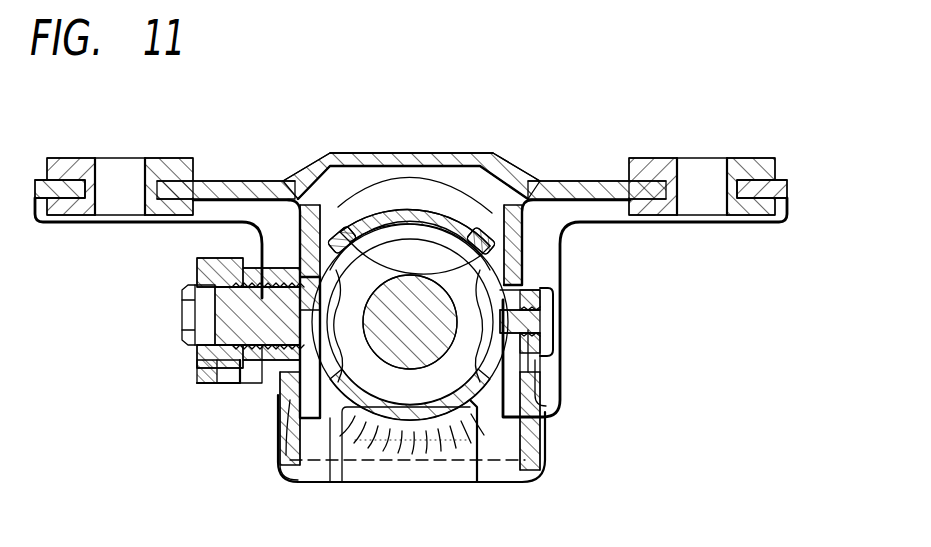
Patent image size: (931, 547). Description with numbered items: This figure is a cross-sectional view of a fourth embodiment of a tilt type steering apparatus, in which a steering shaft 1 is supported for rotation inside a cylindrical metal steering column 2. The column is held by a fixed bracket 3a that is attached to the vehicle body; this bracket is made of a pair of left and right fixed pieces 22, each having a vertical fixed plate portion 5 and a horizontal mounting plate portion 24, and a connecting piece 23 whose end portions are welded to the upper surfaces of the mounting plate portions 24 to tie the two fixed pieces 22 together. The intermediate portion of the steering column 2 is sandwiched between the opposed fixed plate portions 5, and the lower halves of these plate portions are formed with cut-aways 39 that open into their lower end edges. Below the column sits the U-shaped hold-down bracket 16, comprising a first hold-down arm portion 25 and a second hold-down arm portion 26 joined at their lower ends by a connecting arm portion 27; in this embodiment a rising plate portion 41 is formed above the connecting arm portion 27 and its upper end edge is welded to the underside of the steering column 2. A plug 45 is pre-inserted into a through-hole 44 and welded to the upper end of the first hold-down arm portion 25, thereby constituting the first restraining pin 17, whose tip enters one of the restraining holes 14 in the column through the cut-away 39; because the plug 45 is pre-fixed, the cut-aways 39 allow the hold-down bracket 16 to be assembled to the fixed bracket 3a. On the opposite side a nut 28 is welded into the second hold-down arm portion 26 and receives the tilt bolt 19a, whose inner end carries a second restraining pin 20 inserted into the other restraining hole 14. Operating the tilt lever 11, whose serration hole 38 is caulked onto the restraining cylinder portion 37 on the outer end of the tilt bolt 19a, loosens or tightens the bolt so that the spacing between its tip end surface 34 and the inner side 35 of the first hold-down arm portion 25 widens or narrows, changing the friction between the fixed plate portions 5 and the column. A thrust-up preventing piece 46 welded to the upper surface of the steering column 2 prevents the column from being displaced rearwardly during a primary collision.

The steering shaft 1 is at (410, 276).
The steering column 2 is at (518, 432).
The fixed bracket 3a is at (390, 138).
The fixed plate portion 5 is at (296, 232).
The tilt lever 11 is at (204, 378).
The restraining hole 14 is at (360, 305).
The hold-down bracket 16 is at (496, 486).
The first restraining pin 17 is at (416, 302).
The tilt bolt 19a is at (232, 372).
The second restraining pin 20 is at (370, 360).
The fixed piece 22 is at (70, 192).
The connecting piece 23 is at (335, 160).
The mounting plate portion 24 is at (222, 186).
The first hold-down arm portion 25 is at (548, 406).
The second hold-down arm portion 26 is at (284, 452).
The connecting arm portion 27 is at (342, 478).
The nut 28 is at (280, 405).
The tip end surface 34 is at (308, 478).
The inner side 35 is at (528, 372).
The restraining cylinder portion 37 is at (186, 298).
The serration hole 38 is at (192, 340).
The cut-away 39 is at (240, 274).
The rising plate portion 41 is at (478, 470).
The through-hole 44 is at (556, 346).
The plug 45 is at (552, 320).
The thrust-up preventing piece 46 is at (452, 210).